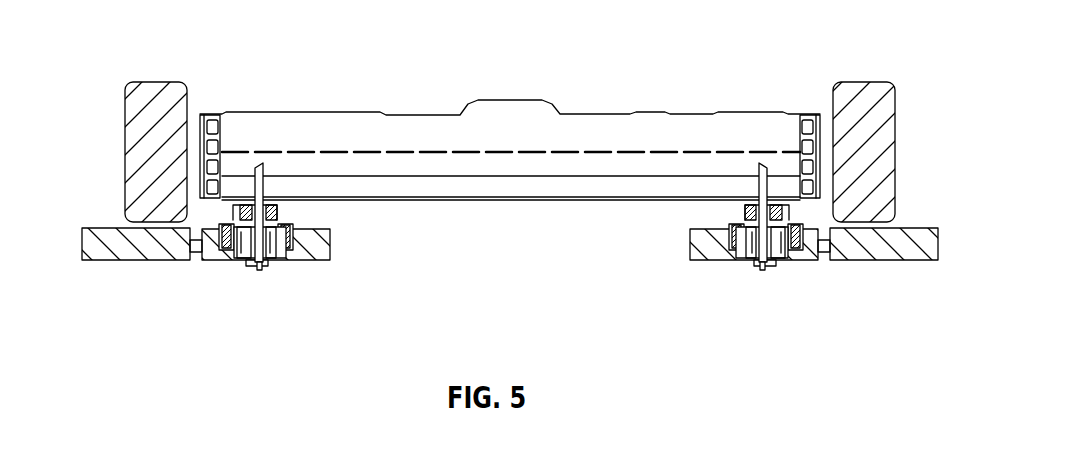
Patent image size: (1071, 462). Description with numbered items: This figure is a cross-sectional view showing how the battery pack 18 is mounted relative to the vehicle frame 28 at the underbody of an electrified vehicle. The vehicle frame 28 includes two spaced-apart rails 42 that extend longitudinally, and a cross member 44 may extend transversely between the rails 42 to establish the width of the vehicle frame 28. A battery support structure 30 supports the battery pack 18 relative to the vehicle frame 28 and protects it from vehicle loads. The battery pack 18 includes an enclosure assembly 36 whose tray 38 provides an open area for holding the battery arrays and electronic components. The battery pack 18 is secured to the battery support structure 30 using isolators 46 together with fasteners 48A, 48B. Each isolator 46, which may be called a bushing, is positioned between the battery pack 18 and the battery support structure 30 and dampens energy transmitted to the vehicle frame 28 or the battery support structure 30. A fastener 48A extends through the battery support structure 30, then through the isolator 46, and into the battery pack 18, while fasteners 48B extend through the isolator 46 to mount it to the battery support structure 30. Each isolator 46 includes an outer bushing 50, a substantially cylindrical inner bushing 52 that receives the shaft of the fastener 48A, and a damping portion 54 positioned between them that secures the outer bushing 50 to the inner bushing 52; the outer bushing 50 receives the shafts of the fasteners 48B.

The battery pack 18 is at (609, 106).
The vehicle frame 28 is at (896, 78).
The battery support structure 30 is at (143, 266).
The enclosure assembly 36 is at (752, 104).
The tray 38 is at (492, 203).
The rails 42 is at (140, 113).
The cross member 44 is at (588, 224).
The isolator 46 is at (286, 216).
The fastener 48A is at (260, 270).
The fasteners 48B is at (291, 236).
The outer bushing 50 is at (293, 245).
The inner bushing 52 is at (241, 258).
The damping portion 54 is at (235, 216).